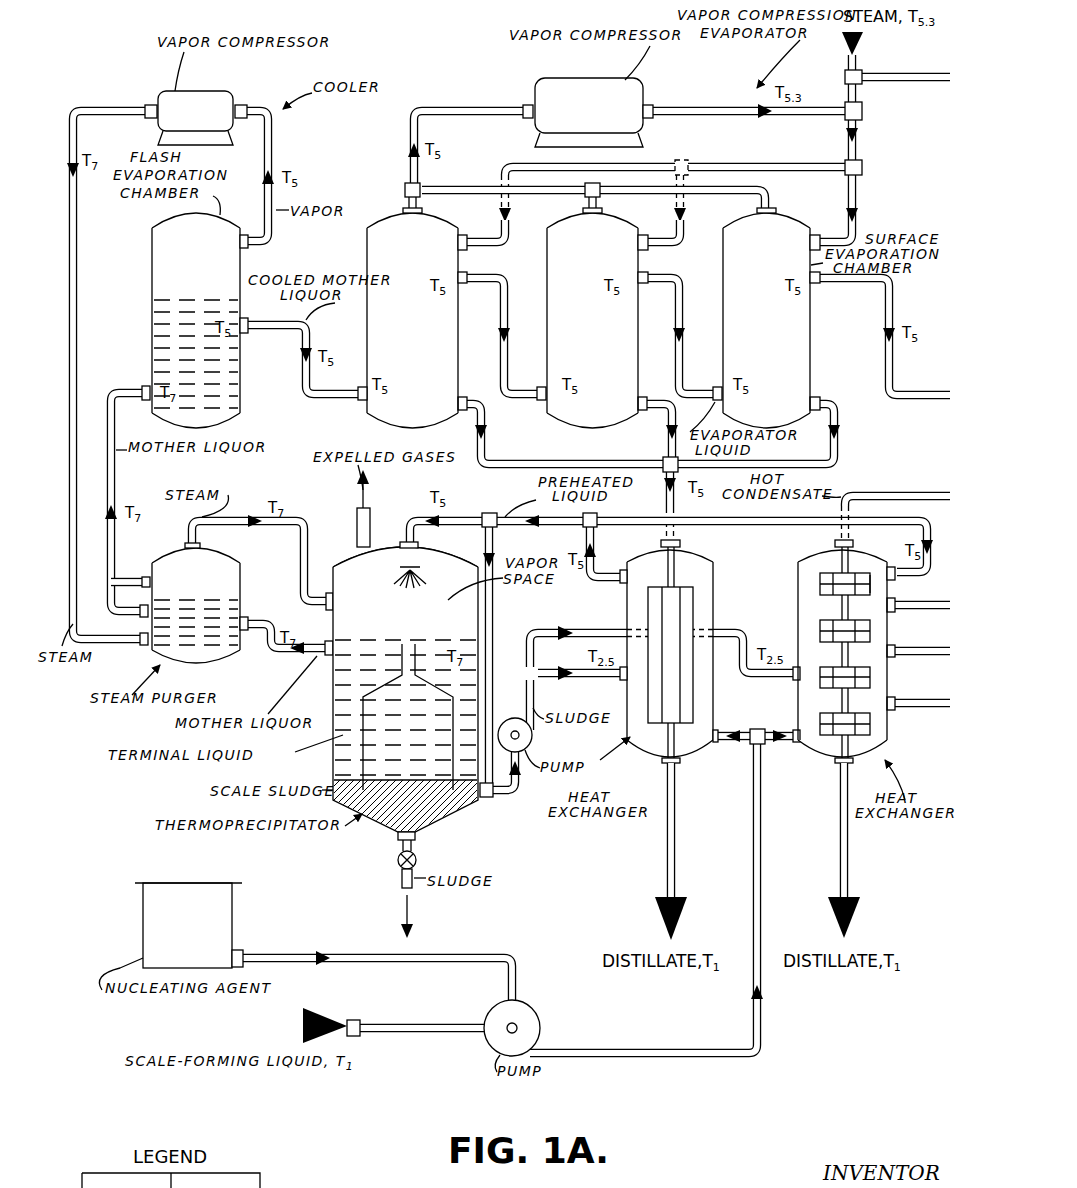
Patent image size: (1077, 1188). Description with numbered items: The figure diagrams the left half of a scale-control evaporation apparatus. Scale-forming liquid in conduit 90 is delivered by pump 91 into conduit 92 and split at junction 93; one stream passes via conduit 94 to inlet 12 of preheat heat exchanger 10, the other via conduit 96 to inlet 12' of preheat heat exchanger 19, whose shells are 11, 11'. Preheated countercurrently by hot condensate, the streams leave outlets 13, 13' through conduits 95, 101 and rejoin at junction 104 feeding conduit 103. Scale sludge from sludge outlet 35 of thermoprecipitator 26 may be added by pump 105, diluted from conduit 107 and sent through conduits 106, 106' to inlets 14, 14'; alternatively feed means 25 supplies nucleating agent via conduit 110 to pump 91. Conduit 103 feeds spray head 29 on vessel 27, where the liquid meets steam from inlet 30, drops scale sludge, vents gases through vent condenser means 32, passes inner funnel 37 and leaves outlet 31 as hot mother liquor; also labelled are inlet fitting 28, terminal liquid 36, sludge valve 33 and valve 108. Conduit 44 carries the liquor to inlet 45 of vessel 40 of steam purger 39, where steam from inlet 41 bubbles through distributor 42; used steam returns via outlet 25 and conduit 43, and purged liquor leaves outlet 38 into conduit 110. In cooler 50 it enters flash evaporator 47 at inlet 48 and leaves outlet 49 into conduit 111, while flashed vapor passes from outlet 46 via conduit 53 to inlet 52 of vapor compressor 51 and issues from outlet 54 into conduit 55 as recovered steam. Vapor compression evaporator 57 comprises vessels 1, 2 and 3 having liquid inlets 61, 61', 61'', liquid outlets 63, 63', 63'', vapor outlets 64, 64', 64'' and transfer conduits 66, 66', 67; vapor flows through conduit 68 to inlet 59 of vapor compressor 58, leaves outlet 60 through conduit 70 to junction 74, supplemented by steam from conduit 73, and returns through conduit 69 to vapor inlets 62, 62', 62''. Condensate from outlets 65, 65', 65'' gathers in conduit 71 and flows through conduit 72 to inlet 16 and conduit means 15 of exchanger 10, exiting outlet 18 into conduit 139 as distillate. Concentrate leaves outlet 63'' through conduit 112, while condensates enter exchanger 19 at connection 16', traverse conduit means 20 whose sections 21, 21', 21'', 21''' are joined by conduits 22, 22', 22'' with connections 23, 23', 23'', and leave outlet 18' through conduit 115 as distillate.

The surface evaporation vessel 1 is at (432, 222).
The surface evaporation vessel 2 is at (622, 235).
The surface evaporation vessel 3 is at (780, 222).
The preheat heat exchanger 10 is at (692, 559).
The heat exchanger shell 11 is at (691, 646).
The second heat exchanger shell 11' is at (829, 653).
The inlet 12 is at (719, 757).
The inlet 12' is at (792, 755).
The outlet 13 is at (613, 590).
The outlet 13' is at (921, 570).
The inlet 14 is at (614, 692).
The inlet 14' is at (785, 687).
The conduit means 15 is at (695, 605).
The inlet 16 is at (659, 642).
The condensate pipe 16' is at (877, 522).
The distillate outlet 18 is at (652, 779).
The distillate outlet 18' is at (862, 767).
The preheat heat exchanger 19 is at (857, 551).
The conduit means 20 is at (811, 598).
The conduit section 21 is at (894, 588).
The conduit section 21' is at (869, 635).
The conduit section 21'' is at (870, 680).
The conduit section 21''' is at (875, 736).
The interconnecting conduit 22 is at (826, 608).
The interconnecting conduit 22' is at (826, 655).
The interconnecting conduit 22'' is at (826, 702).
The outlet connection 23 is at (915, 619).
The outlet pipe 23' is at (918, 668).
The outlet pipe 23'' is at (918, 714).
The feed means 25 is at (200, 545).
The thermoprecipitator 26 is at (386, 532).
The vessel 27 is at (327, 594).
The liquid inlet 28 is at (418, 545).
The spray head 29 is at (422, 575).
The steam inlet 30 is at (334, 600).
The outlet 31 is at (328, 641).
The vent condenser means 32 is at (357, 530).
The sludge valve 33 is at (400, 877).
The sludge outlet 35 is at (488, 798).
The terminal liquid 36 is at (334, 712).
The inner funnel 37 is at (396, 646).
The outlet 38 is at (140, 618).
The steam purger 39 is at (186, 540).
The vessel 40 is at (143, 583).
The steam inlet 41 is at (140, 645).
The distributor 42 is at (200, 650).
The conduit 43 is at (304, 518).
The conduit 44 is at (290, 655).
The inlet 45 is at (247, 631).
The vapor outlet 46 is at (246, 249).
The flash evaporator 47 is at (152, 278).
The inlet 48 is at (146, 401).
The outlet 49 is at (246, 334).
The cooler 50 is at (266, 99).
The vapor compressor 51 is at (190, 91).
The inlet 52 is at (247, 105).
The conduit 53 is at (275, 131).
The outlet 54 is at (152, 105).
The conduit 55 is at (72, 139).
The vapor compression evaporator 57 is at (684, 94).
The vapor compressor 58 is at (570, 80).
The inlet 59 is at (528, 105).
The outlet 60 is at (650, 104).
The liquid inlet 61 is at (342, 408).
The liquid inlet 61' is at (529, 409).
The liquid inlet 61'' is at (732, 409).
The compressed vapor inlet 62 is at (478, 252).
The compressed vapor inlet 62' is at (660, 253).
The compressed vapor inlet 62'' is at (826, 232).
The liquid outlet 63 is at (475, 290).
The liquid outlet 63' is at (659, 290).
The liquid outlet 63'' is at (836, 289).
The vapor outlet 64 is at (392, 198).
The vapor outlet 64' is at (609, 200).
The vapor outlet 64'' is at (749, 206).
The condensate outlet 65 is at (560, 415).
The condensate outlet 65' is at (658, 411).
The condensate outlet 65'' is at (766, 415).
The transfer pipe 66 is at (502, 336).
The transfer pipe 66' is at (683, 336).
The vapor pipe 67 is at (487, 187).
The conduit 68 is at (410, 131).
The conduit 69 is at (733, 163).
The conduit 70 is at (690, 110).
The conduit 71 is at (600, 462).
The conduit 72 is at (666, 503).
The steam conduit 73 is at (847, 62).
The junction 74 is at (863, 110).
The conduit 90 is at (395, 1024).
The pump 91 is at (540, 1006).
The conduit 92 is at (762, 856).
The junction 93 is at (757, 729).
The conduit 94 is at (730, 732).
The conduit 95 is at (592, 578).
The conduit 96 is at (780, 733).
The conduit 101 is at (923, 596).
The conduit 103 is at (456, 513).
The junction 104 is at (594, 528).
The pump 105 is at (533, 740).
The conduit 106 is at (575, 698).
The conduit 106' is at (645, 641).
The conduit 107 is at (494, 600).
The valve 108 is at (491, 513).
The conduit 110 is at (116, 472).
The conduit 111 is at (303, 372).
The conduit 112 is at (893, 303).
The conduit 115 is at (851, 851).
The conduit 139 is at (667, 850).